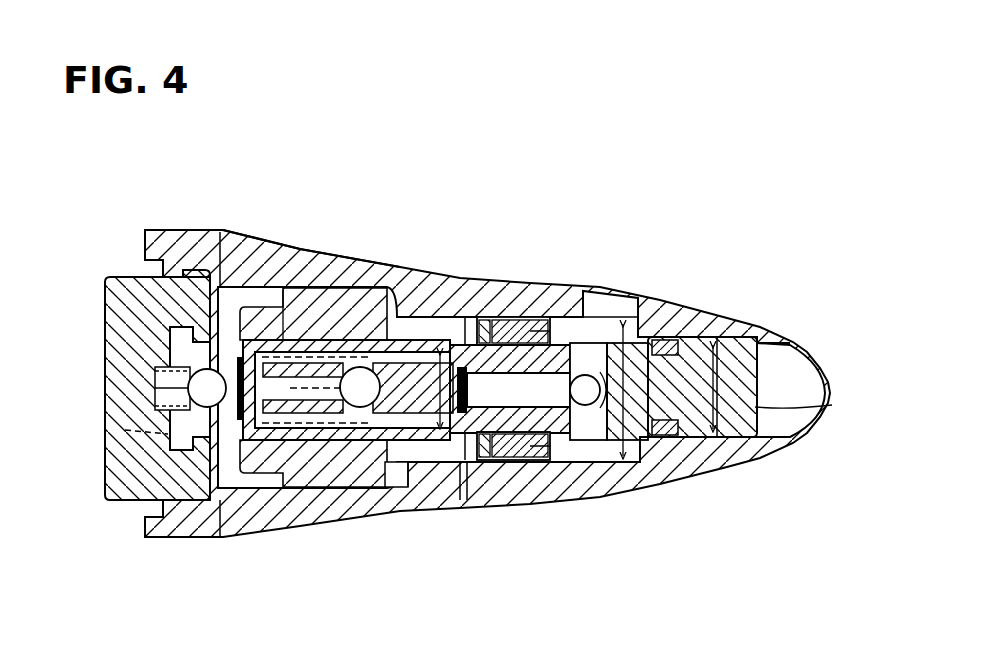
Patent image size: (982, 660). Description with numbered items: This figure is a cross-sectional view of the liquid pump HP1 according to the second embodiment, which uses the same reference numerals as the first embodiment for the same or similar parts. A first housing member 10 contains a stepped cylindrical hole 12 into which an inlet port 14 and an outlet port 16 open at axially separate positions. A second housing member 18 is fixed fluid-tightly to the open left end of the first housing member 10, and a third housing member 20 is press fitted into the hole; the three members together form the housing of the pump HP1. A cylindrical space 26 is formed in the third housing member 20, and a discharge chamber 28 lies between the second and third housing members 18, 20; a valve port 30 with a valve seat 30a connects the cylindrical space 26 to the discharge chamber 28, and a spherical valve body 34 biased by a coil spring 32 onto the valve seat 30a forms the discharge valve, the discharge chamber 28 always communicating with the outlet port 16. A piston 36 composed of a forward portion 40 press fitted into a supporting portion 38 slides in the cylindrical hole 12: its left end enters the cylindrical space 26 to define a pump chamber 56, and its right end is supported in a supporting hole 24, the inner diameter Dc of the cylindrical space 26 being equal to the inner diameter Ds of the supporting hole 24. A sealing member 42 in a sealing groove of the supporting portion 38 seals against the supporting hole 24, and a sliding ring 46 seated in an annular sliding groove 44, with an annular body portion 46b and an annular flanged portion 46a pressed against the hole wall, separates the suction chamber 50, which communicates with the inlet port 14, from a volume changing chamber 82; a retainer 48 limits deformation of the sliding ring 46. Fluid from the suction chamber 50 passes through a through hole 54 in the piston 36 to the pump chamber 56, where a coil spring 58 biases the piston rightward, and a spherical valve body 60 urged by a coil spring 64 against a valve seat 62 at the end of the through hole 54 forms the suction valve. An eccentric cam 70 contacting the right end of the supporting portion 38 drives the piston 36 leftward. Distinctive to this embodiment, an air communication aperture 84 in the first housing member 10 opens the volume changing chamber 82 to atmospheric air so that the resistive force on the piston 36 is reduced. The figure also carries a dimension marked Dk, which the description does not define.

The first housing member 10 is at (157, 533).
The cylindrical hole 12 is at (223, 485).
The inlet port 14 is at (634, 312).
The outlet port 16 is at (203, 270).
The second housing member 18 is at (127, 282).
The third housing member 20 is at (301, 275).
The supporting hole 24 is at (740, 440).
The cylindrical space 26 is at (303, 440).
The discharge chamber 28 is at (190, 270).
The valve port 30 is at (128, 330).
The valve seat 30a is at (188, 397).
The coil spring 32 is at (118, 423).
The valve body 34 is at (150, 370).
The piston 36 is at (590, 473).
The supporting portion 38 is at (692, 335).
The forward portion 40 is at (407, 305).
The sealing member 42 is at (667, 447).
The annular sliding groove 44 is at (473, 312).
The sliding ring 46 is at (537, 462).
The annular flanged portion 46a is at (533, 315).
The annular body portion 46b is at (490, 312).
The retainer 48 is at (487, 480).
The suction chamber 50 is at (570, 312).
The through hole 54 is at (565, 477).
The pump chamber 56 is at (267, 270).
The coil spring 58 is at (258, 430).
The valve body 60 is at (387, 473).
The valve seat 62 is at (353, 440).
The coil spring 64 is at (356, 305).
The eccentric cam 70 is at (780, 348).
The volume changing chamber 82 is at (460, 470).
The air communication aperture 84 is at (418, 470).
The inner diameter of the cylindrical space Dc is at (440, 340).
The bore diameter Dk is at (613, 322).
The inner diameter of the supporting hole Ds is at (810, 405).
The liquid pump HP1 is at (603, 127).